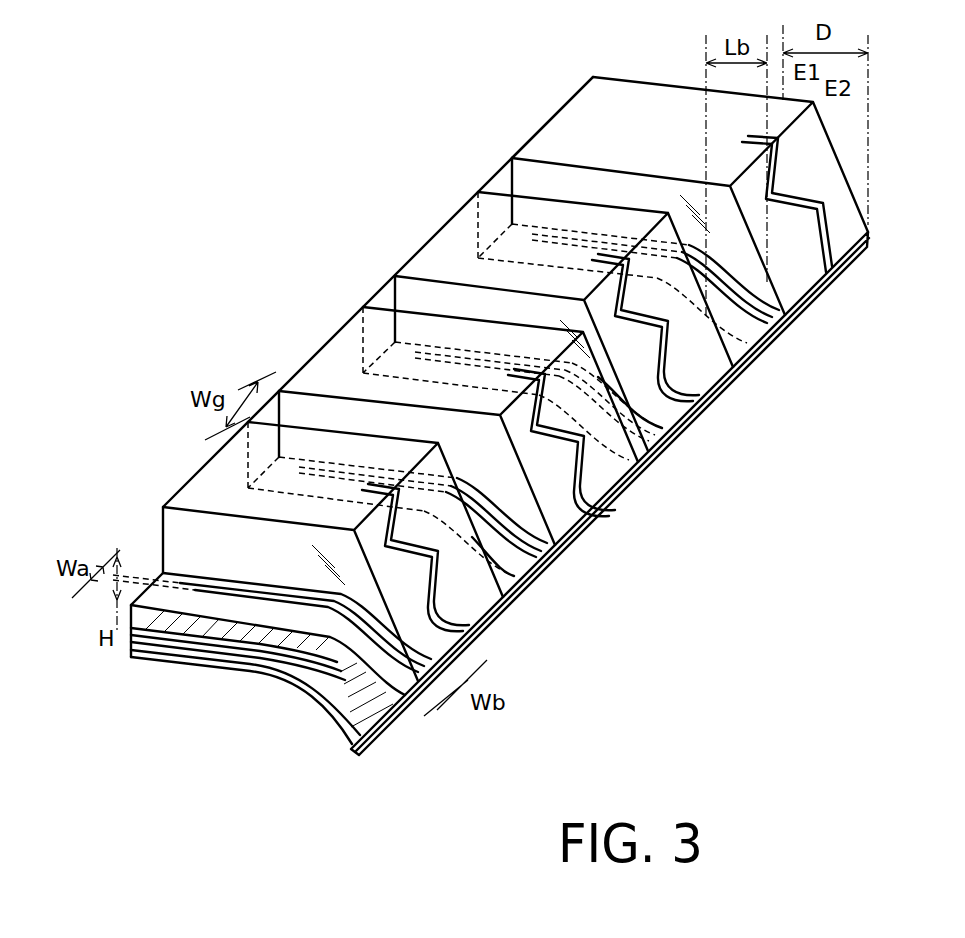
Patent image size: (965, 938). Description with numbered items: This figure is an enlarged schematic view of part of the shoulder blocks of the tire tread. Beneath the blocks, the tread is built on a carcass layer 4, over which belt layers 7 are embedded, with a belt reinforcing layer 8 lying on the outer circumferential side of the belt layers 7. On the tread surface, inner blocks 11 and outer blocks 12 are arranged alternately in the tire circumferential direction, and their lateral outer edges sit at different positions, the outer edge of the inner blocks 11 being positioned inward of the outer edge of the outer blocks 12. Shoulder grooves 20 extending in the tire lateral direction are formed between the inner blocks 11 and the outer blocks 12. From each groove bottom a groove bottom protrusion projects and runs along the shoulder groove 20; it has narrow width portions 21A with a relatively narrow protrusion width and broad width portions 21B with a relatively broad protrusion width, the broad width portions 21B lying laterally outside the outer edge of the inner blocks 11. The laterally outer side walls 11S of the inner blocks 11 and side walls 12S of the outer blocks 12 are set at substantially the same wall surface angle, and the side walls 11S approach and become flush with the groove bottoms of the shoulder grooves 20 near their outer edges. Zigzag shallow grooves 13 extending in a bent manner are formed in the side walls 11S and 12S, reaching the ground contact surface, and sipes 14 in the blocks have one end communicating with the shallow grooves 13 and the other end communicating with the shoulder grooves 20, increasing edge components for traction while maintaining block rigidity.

The carcass layer 4 is at (313, 707).
The belt layers 7 is at (147, 645).
The belt reinforcing layer 8 is at (173, 634).
The inner blocks 11 is at (472, 205).
The side walls of the inner blocks 11S is at (690, 323).
The outer blocks 12 is at (593, 77).
The side walls of the outer blocks 12S is at (827, 172).
The shallow grooves 13 is at (818, 240).
The sipes 14 is at (565, 112).
The shoulder grooves 20 is at (533, 180).
The narrow width portions 21A is at (232, 590).
The broad width portions 21B is at (380, 640).